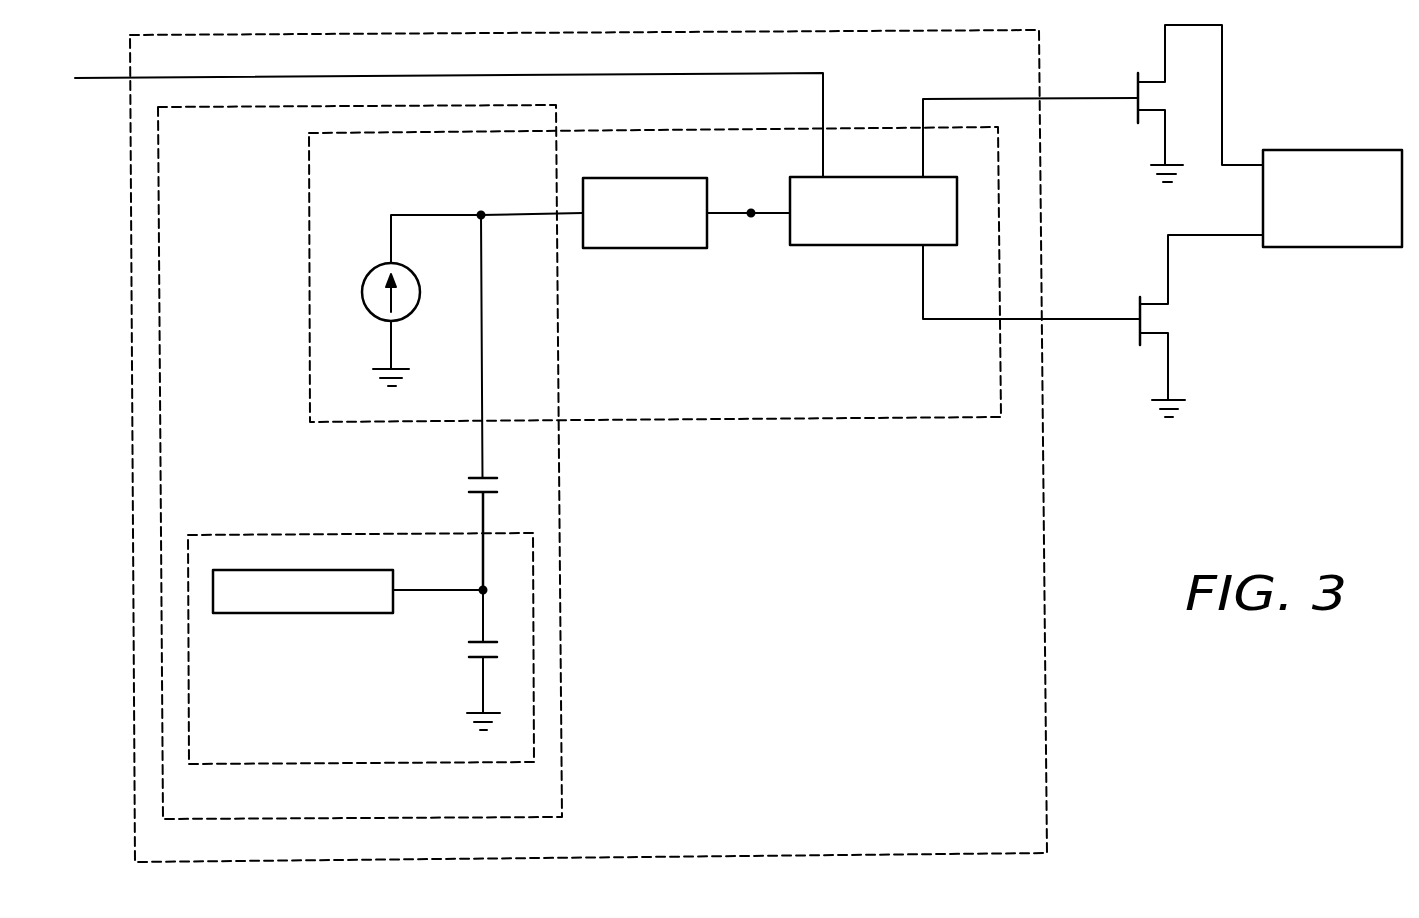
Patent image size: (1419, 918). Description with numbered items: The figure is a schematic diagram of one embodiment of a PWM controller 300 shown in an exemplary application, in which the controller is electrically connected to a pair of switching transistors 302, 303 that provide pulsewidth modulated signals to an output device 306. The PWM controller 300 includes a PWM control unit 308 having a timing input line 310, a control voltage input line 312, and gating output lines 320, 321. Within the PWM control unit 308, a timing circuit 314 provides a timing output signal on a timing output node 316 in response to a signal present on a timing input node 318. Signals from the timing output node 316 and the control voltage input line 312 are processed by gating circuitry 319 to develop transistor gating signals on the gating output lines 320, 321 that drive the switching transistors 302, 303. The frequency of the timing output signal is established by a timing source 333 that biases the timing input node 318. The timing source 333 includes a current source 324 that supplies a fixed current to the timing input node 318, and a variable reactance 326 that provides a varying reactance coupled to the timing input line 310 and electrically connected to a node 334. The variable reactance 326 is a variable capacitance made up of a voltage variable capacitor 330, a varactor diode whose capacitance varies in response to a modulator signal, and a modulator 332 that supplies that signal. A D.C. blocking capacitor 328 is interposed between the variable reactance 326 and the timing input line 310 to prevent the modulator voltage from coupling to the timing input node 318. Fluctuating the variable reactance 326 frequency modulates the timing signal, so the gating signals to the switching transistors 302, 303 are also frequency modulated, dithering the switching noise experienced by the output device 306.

The PWM controller 300 is at (1000, 855).
The switching transistor 302 is at (1138, 72).
The switching transistor 303 is at (1140, 297).
The output device 306 is at (1313, 148).
The PWM control unit 308 is at (902, 417).
The timing input line 310 is at (481, 448).
The control voltage input line 312 is at (103, 77).
The timing circuit 314 is at (687, 248).
The timing output node 316 is at (751, 211).
The timing input node 318 is at (481, 211).
The gating circuitry 319 is at (877, 248).
The gating output line 320 is at (1099, 99).
The gating output line 321 is at (1103, 322).
The current source 324 is at (368, 268).
The variable reactance 326 is at (270, 535).
The D.C. blocking capacitor 328 is at (477, 493).
The voltage variable capacitor 330 is at (477, 658).
The modulator 332 is at (297, 613).
The timing source 333 is at (523, 815).
The node 334 is at (483, 588).